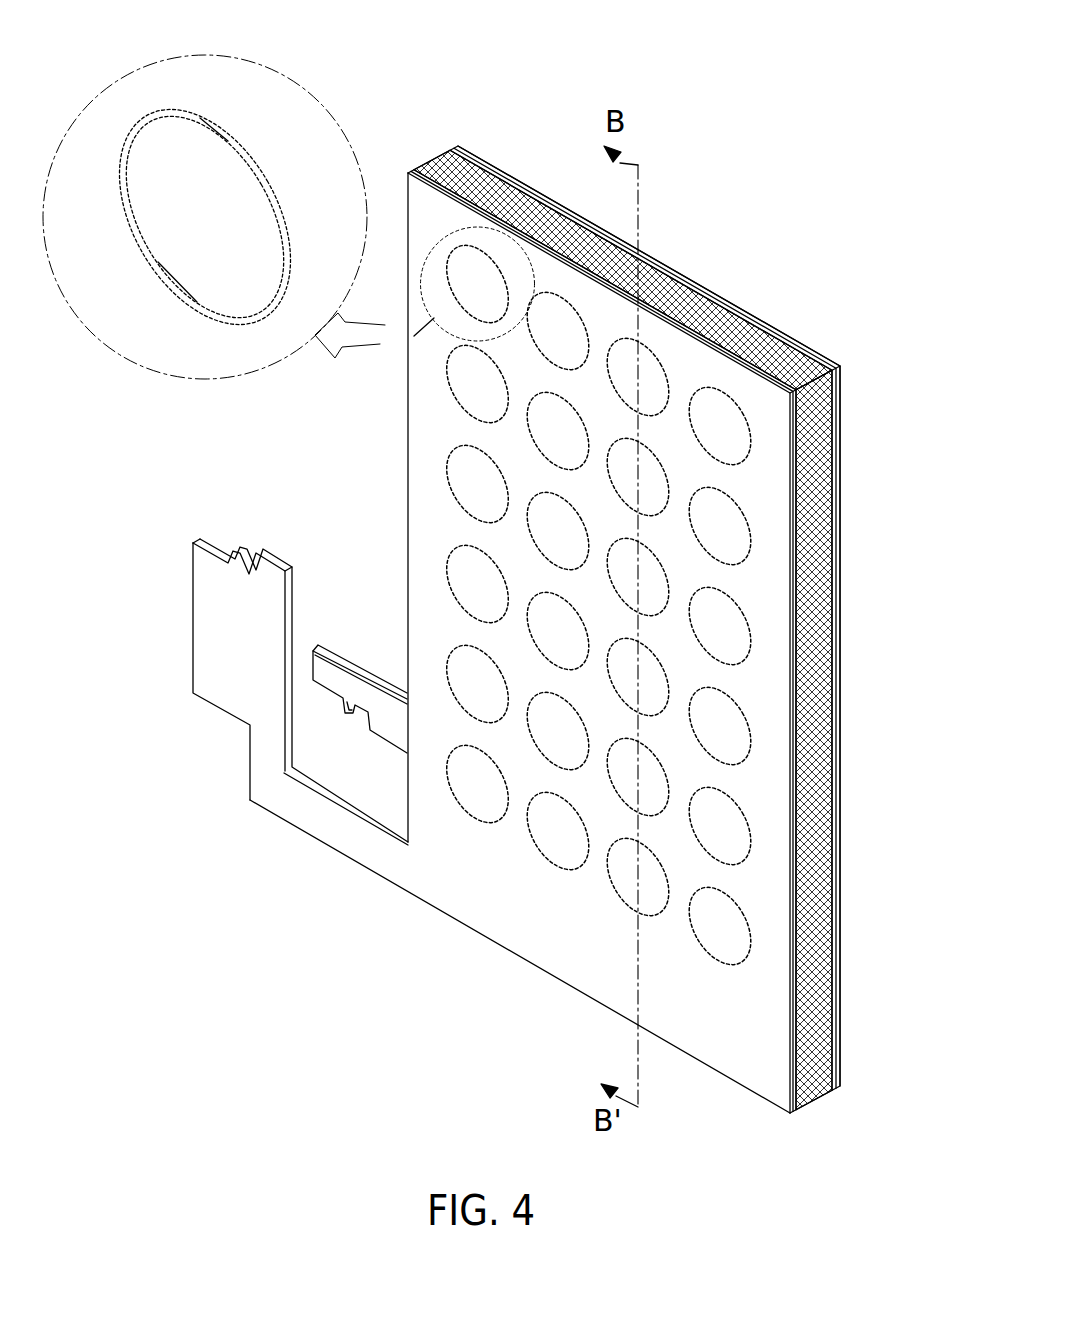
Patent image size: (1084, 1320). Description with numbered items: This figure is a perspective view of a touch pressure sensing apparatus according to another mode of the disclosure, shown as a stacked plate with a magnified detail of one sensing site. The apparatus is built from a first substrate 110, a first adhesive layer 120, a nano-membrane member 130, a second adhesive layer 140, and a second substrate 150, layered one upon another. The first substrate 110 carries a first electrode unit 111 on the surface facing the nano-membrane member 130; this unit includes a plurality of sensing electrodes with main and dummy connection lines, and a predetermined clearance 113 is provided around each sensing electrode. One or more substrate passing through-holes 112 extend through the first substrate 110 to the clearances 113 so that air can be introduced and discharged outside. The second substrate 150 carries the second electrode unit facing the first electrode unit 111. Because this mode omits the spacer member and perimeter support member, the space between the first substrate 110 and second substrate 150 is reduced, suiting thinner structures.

The first substrate 110 is at (792, 1113).
The first electrode unit 111 is at (204, 196).
The substrate passing through-hole 112 is at (205, 310).
The clearance 113 is at (243, 153).
The first adhesive layer 120 is at (802, 1113).
The nano-membrane member 130 is at (823, 1100).
The second adhesive layer 140 is at (838, 1087).
The second substrate 150 is at (843, 1057).